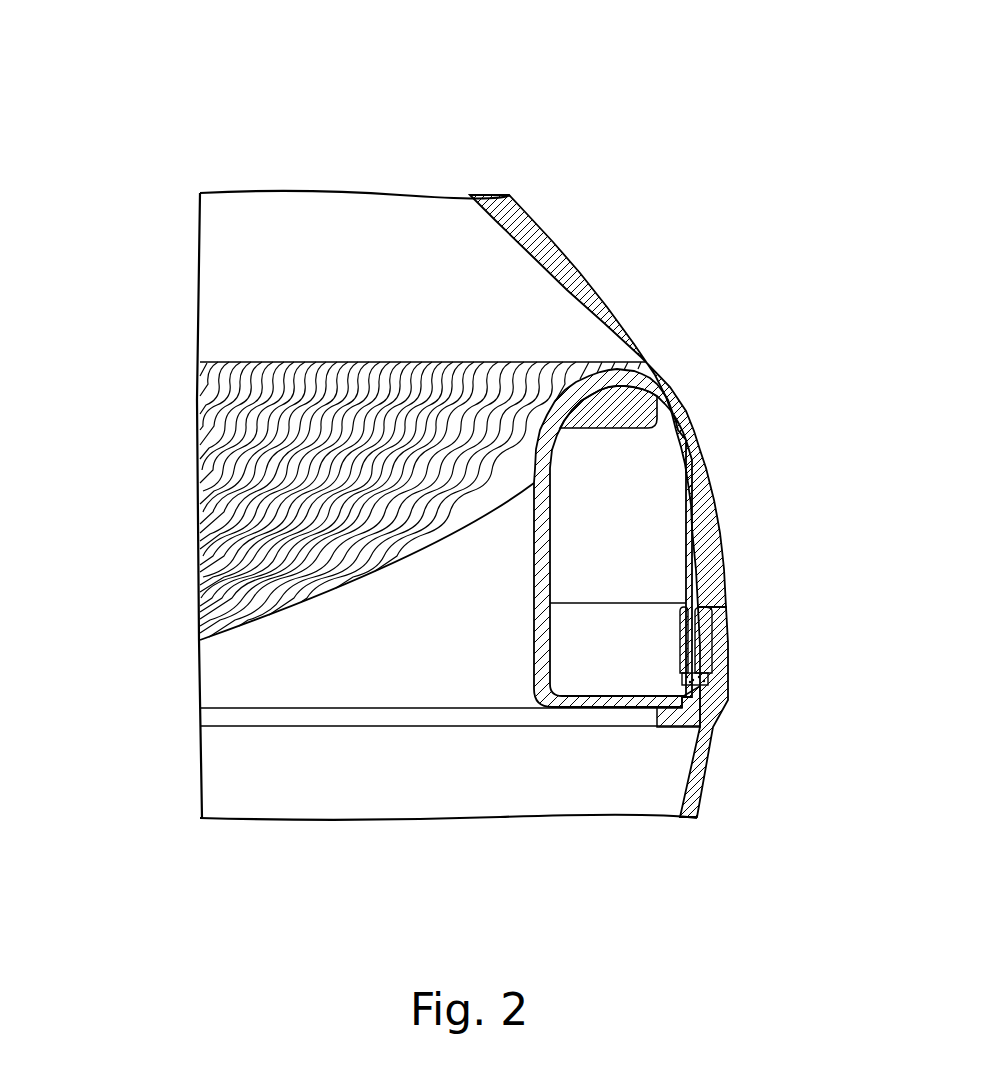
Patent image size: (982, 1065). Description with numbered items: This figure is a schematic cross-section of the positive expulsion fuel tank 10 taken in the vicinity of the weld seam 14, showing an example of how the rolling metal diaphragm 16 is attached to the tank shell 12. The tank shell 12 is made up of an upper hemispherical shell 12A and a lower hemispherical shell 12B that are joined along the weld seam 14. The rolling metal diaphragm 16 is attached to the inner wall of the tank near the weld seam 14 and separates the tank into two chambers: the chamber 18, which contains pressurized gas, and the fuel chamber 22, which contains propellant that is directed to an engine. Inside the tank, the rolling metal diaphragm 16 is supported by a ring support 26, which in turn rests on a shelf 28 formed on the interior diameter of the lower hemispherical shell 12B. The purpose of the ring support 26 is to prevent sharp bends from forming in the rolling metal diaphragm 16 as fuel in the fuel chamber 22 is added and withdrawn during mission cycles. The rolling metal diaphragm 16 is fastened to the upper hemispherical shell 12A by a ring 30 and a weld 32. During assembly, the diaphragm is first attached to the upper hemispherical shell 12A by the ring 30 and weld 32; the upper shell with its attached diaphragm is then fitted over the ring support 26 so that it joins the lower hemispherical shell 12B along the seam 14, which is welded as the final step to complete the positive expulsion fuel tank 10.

The positive expulsion fuel tank 10 is at (662, 126).
The tank shell 12 is at (666, 509).
The upper hemispherical shell 12A is at (560, 249).
The lower hemispherical shell 12B is at (690, 795).
The weld seam 14 is at (740, 598).
The rolling metal diaphragm 16 is at (315, 487).
The chamber 18 is at (290, 283).
The fuel chamber 22 is at (332, 643).
The ring support 26 is at (640, 396).
The shelf 28 is at (700, 712).
The ring 30 is at (688, 627).
The weld 32 is at (706, 680).